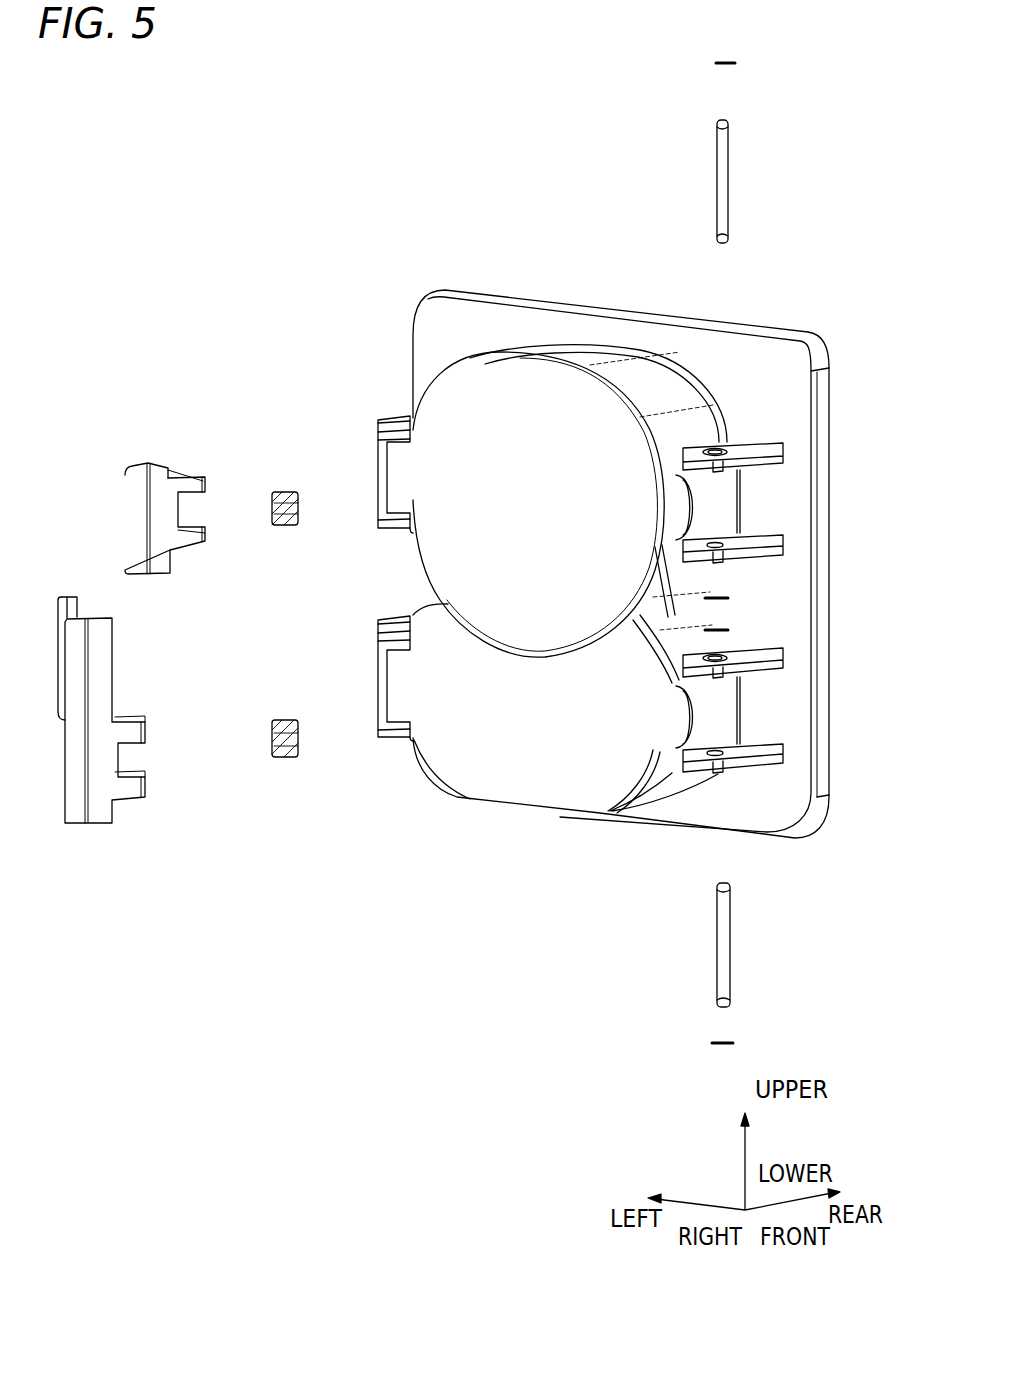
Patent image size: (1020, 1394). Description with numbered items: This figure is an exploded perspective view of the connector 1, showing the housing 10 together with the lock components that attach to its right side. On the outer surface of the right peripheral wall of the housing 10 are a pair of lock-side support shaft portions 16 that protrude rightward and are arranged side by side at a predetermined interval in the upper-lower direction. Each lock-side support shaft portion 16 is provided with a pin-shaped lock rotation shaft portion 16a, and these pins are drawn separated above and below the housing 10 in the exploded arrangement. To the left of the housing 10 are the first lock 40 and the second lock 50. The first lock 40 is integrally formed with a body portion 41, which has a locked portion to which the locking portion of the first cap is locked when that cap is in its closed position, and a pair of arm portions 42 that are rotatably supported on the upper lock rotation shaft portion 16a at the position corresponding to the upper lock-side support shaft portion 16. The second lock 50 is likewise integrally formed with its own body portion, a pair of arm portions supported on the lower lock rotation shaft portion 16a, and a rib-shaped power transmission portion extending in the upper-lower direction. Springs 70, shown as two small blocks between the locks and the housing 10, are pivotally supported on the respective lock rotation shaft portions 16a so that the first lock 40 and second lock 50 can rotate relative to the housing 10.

The connector 1 is at (564, 238).
The housing 10 is at (814, 330).
The lock-side support shaft portion 16 is at (753, 461).
The lock rotation shaft portion 16a is at (724, 181).
The first lock 40 is at (215, 380).
The body portion 41 is at (155, 487).
The arm portion 42 is at (195, 477).
The second lock 50 is at (75, 827).
The spring 70 is at (283, 484).